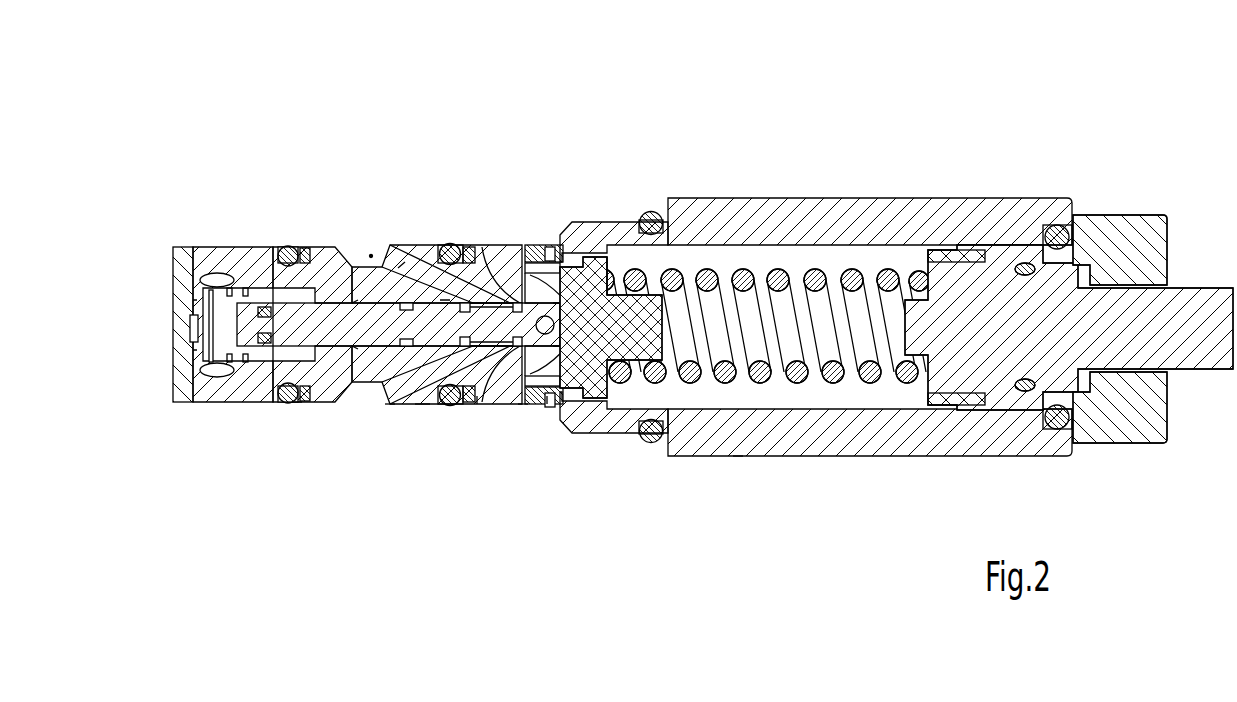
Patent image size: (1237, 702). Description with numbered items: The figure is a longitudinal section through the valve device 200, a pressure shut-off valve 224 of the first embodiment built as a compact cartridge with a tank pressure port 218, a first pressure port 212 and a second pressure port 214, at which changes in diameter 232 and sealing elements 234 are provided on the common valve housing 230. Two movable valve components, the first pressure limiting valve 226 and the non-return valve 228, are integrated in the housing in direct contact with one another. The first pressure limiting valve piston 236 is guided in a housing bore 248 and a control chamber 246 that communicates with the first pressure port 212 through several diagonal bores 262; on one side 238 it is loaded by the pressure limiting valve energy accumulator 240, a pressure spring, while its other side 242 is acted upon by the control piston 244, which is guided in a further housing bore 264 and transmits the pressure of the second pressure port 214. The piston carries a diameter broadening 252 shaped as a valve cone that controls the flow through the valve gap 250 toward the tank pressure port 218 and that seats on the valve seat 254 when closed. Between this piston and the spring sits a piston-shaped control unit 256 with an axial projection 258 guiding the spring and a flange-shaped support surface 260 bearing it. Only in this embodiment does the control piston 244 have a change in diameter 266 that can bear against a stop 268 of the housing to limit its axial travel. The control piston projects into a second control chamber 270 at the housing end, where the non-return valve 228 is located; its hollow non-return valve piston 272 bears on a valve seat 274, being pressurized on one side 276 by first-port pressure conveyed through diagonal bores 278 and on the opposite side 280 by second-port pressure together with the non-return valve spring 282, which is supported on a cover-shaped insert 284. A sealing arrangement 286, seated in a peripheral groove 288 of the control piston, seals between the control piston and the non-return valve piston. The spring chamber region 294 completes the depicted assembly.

The valve device 200 is at (861, 104).
The first pressure port 212 is at (388, 262).
The second pressure port 214 is at (222, 278).
The tank pressure port 218 is at (540, 263).
The pressure shut-off valve 224 is at (423, 404).
The first pressure limiting valve 226 is at (523, 404).
The non-return valve 228 is at (245, 402).
The valve housing 230 is at (480, 404).
The changes in diameter 232 is at (697, 198).
The sealing elements 234 is at (291, 248).
The first pressure limiting valve piston 236 is at (512, 404).
The side of the pressure limiting valve piston 238 is at (613, 434).
The pressure limiting valve energy accumulator 240 is at (797, 383).
The other side of the pressure limiting valve piston 242 is at (407, 404).
The control piston 244 is at (356, 350).
The control chamber 246 is at (530, 247).
The housing bore 248 is at (430, 277).
The valve gap 250 is at (547, 404).
The diameter broadening 252 is at (580, 230).
The valve seat 254 is at (544, 300).
The piston-shaped control unit 256 is at (652, 318).
The axial projection 258 is at (625, 392).
The flange-shaped support surface 260 is at (636, 221).
The diagonal bores 262 is at (440, 300).
The housing bore 264 is at (371, 256).
The change in diameter 266 is at (398, 268).
The stop 268 is at (390, 404).
The second control chamber 270 is at (297, 402).
The non-return valve piston 272 is at (262, 300).
The valve seat 274 is at (266, 307).
The side of the non-return valve piston 276 is at (333, 262).
The diagonal bores 278 is at (358, 300).
The opposite side of the non-return valve piston 280 is at (211, 290).
The non-return valve spring 282 is at (180, 325).
The cover-shaped insert 284 is at (170, 330).
The sealing arrangement 286 is at (266, 343).
The peripheral groove 288 is at (180, 255).
The spring chamber wall 294 is at (738, 456).